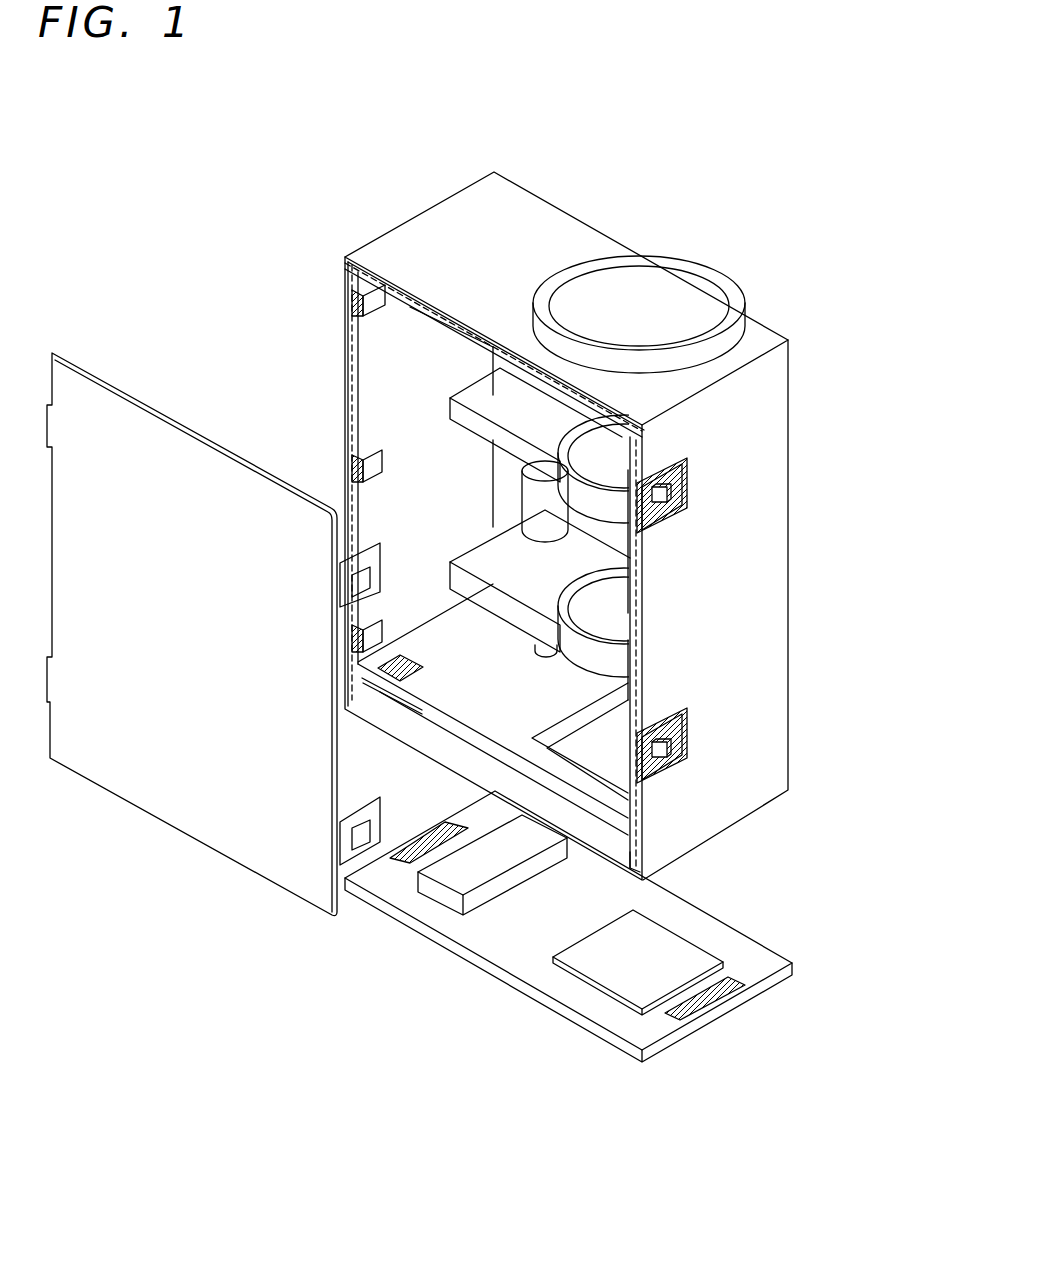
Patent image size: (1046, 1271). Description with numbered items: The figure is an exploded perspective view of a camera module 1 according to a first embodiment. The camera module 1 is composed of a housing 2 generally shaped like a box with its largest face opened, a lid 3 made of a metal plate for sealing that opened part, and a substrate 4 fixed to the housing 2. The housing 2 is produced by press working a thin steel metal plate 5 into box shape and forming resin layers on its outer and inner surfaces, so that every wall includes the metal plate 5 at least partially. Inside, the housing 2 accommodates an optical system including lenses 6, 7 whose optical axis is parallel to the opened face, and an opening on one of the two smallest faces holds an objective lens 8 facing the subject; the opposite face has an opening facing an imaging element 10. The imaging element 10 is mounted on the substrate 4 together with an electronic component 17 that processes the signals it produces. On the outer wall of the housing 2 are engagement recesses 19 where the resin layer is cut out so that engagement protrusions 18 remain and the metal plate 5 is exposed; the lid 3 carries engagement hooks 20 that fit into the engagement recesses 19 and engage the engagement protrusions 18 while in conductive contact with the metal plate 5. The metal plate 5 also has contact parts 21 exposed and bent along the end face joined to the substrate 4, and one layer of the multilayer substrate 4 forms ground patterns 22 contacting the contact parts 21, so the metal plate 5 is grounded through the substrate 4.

The camera module 1 is at (366, 184).
The housing 2 is at (536, 236).
The lid 3 is at (181, 416).
The substrate 4 is at (488, 981).
The metal plate 5 is at (346, 331).
The lens 6 is at (588, 452).
The lens 7 is at (601, 613).
The objective lens 8 is at (648, 295).
The imaging element 10 is at (618, 978).
The electronic component 17 is at (435, 895).
The engagement protrusion 18 is at (668, 496).
The engagement recess 19 is at (688, 472).
The engagement hook 20 is at (361, 574).
The contact part 21 is at (348, 710).
The ground pattern 22 is at (443, 830).